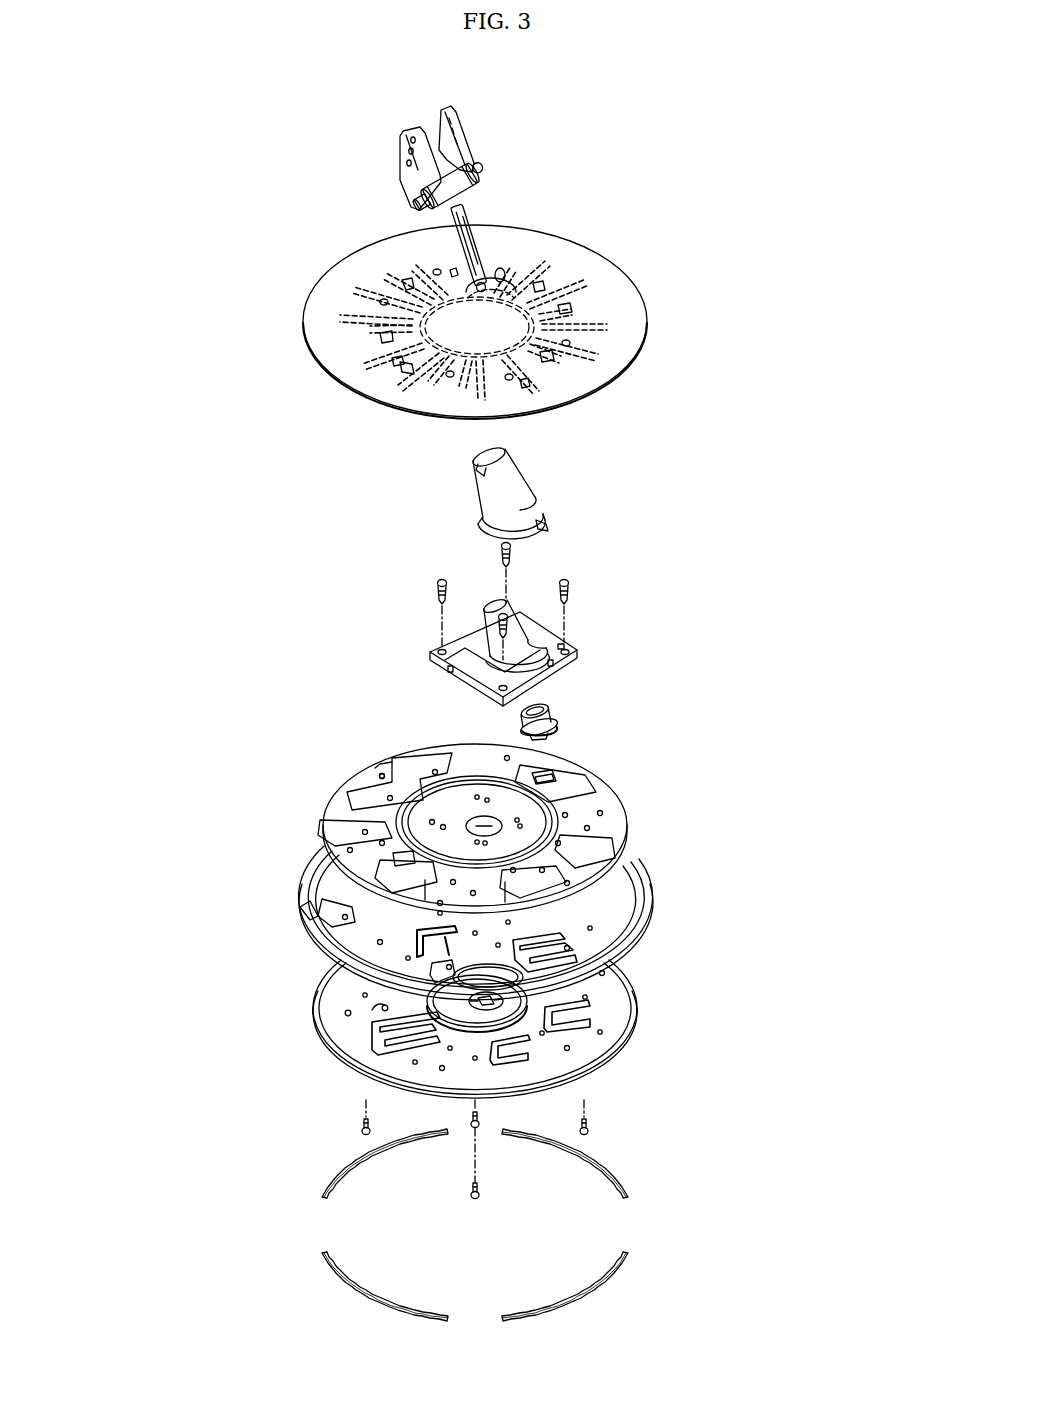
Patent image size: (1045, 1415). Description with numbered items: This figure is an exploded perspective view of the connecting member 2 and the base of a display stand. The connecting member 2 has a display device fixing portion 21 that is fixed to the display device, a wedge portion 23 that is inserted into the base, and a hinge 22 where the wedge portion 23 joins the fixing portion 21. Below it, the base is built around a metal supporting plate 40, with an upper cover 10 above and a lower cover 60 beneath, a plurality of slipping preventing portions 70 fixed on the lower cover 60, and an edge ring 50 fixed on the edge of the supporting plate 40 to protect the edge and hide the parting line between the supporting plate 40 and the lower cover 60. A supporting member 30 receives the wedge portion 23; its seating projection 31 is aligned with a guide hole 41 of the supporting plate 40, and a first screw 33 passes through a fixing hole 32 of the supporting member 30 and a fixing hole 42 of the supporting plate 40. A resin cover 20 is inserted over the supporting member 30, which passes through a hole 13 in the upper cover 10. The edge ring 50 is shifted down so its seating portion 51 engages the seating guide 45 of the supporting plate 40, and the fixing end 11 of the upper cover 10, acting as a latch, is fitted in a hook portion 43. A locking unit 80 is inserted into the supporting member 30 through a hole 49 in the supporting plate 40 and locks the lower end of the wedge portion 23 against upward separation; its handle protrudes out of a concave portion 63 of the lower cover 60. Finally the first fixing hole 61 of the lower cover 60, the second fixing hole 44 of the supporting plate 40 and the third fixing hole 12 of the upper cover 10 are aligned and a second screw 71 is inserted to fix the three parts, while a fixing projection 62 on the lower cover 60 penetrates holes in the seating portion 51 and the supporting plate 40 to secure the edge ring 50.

The connecting member 2 is at (483, 116).
The upper cover 10 is at (621, 250).
The fixing end 11 is at (388, 370).
The third fixing hole 12 is at (414, 324).
The hole 13 is at (505, 266).
The cover 20 is at (540, 464).
The display device fixing portion 21 is at (419, 126).
The hinge 22 is at (452, 212).
The wedge portion 23 is at (476, 243).
The supporting member 30 is at (607, 650).
The seating projection 31 is at (453, 683).
The fixing hole 32 is at (572, 638).
The first screw 33 is at (566, 578).
The supporting plate 40 is at (625, 779).
The guide hole 41 is at (443, 824).
The fixing hole 42 is at (432, 820).
The hook portion 43 is at (548, 774).
The second fixing hole 44 is at (360, 832).
The seating guide 45 is at (381, 770).
The hole 49 is at (484, 826).
The edge ring 50 is at (670, 880).
The seating portion 51 is at (335, 916).
The lower cover 60 is at (663, 1001).
The first fixing hole 61 is at (372, 1010).
The fixing projection 62 is at (345, 1014).
The concave portion 63 is at (520, 1003).
The slipping preventing portion 70 is at (650, 1191).
The second screw 71 is at (588, 1128).
The locking unit 80 is at (550, 710).